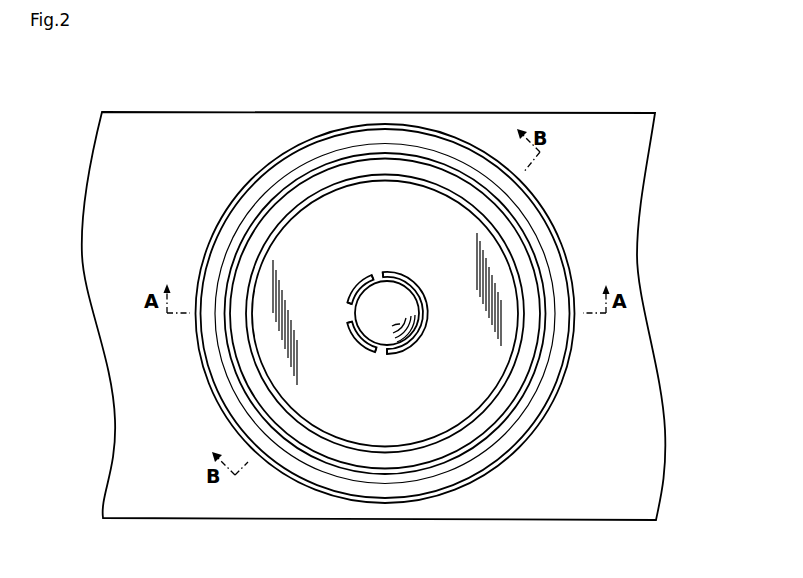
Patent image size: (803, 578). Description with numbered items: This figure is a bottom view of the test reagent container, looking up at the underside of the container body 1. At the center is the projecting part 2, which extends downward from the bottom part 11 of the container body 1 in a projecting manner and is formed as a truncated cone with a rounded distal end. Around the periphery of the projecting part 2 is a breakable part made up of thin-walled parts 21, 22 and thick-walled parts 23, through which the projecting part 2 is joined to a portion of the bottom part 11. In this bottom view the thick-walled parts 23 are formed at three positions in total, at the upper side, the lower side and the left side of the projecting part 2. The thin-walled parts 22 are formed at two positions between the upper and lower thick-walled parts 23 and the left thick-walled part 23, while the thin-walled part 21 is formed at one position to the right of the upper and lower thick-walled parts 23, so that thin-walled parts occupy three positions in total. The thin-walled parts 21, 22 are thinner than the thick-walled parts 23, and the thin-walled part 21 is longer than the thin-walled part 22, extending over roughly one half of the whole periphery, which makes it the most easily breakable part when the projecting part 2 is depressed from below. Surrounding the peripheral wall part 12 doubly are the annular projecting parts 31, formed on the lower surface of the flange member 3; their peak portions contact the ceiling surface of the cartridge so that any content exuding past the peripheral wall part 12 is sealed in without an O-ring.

The container body 1 is at (457, 237).
The projecting part 2 is at (397, 277).
The flange member 3 is at (615, 127).
The bottom part 11 is at (435, 418).
The peripheral wall part 12 is at (488, 408).
The thin-walled part 21 is at (420, 326).
The thin-walled part 22 is at (368, 275).
The thick-walled part 23 is at (386, 277).
The annular projecting parts 31 is at (552, 207).